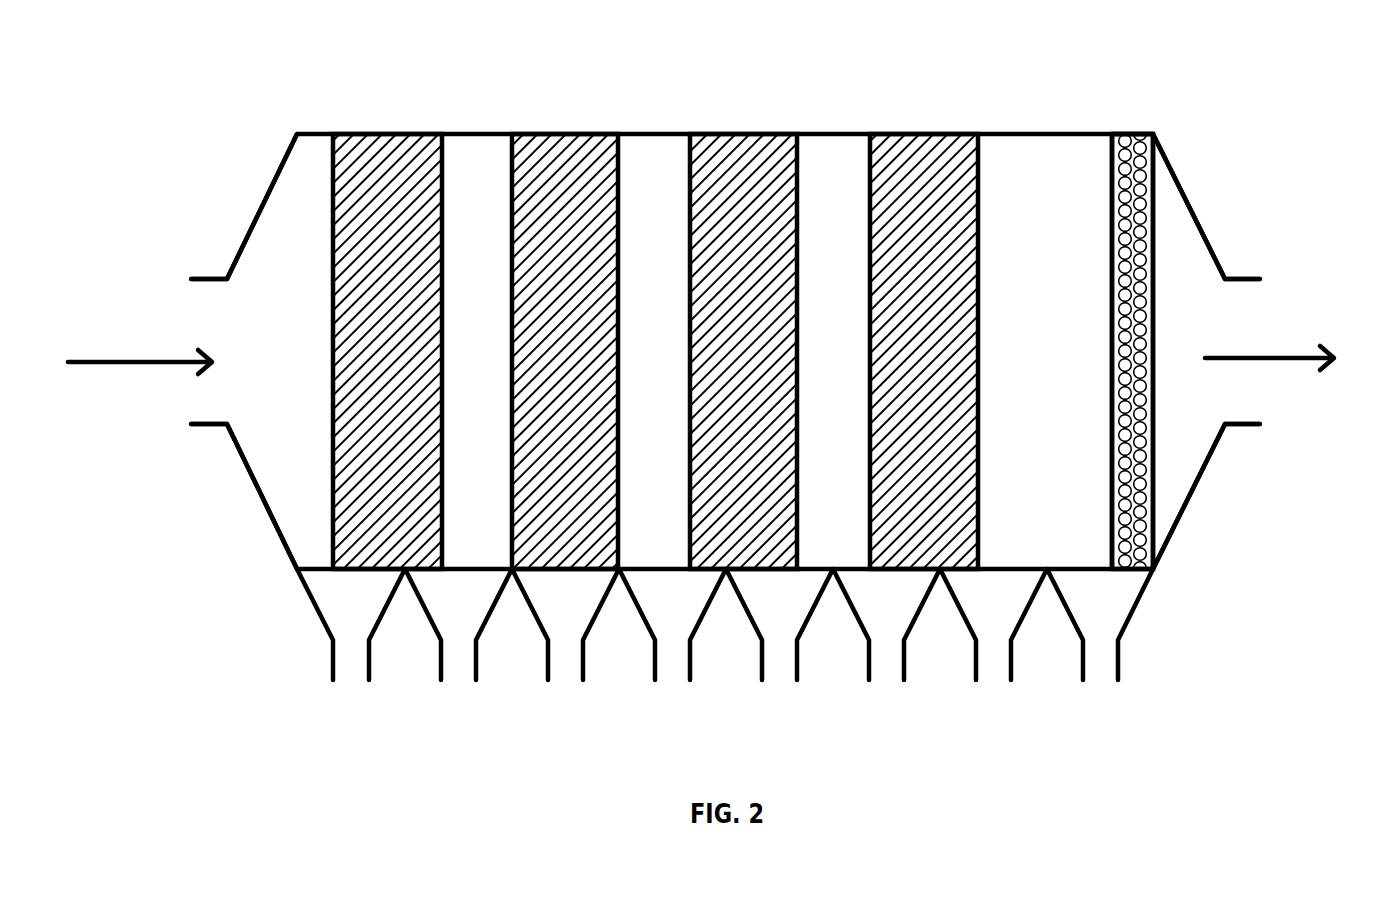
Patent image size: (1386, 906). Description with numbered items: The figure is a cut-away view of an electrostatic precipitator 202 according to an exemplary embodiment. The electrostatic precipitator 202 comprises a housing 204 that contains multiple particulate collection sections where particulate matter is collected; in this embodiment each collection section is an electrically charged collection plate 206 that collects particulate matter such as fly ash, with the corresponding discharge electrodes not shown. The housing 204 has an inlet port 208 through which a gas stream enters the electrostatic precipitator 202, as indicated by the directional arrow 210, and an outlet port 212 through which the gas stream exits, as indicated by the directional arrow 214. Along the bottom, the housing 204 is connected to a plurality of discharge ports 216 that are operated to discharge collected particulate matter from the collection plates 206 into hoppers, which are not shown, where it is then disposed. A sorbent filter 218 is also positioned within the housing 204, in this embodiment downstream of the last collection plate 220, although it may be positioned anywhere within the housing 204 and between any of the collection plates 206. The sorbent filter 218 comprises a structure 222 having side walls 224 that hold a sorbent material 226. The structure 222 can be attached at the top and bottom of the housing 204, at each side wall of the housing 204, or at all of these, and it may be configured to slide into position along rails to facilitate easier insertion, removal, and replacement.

The electrostatic precipitator 202 is at (420, 752).
The housing 204 is at (455, 134).
The collection plate 206 is at (543, 155).
The inlet port 208 is at (205, 279).
The directional arrow 210 is at (150, 362).
The outlet port 212 is at (1240, 279).
The directional arrow 214 is at (1290, 360).
The discharge ports 216 is at (585, 657).
The sorbent filter 218 is at (1128, 134).
The last collection plate 220 is at (943, 212).
The structure 222 is at (1112, 165).
The side walls 224 is at (1155, 280).
The sorbent material 226 is at (1137, 155).